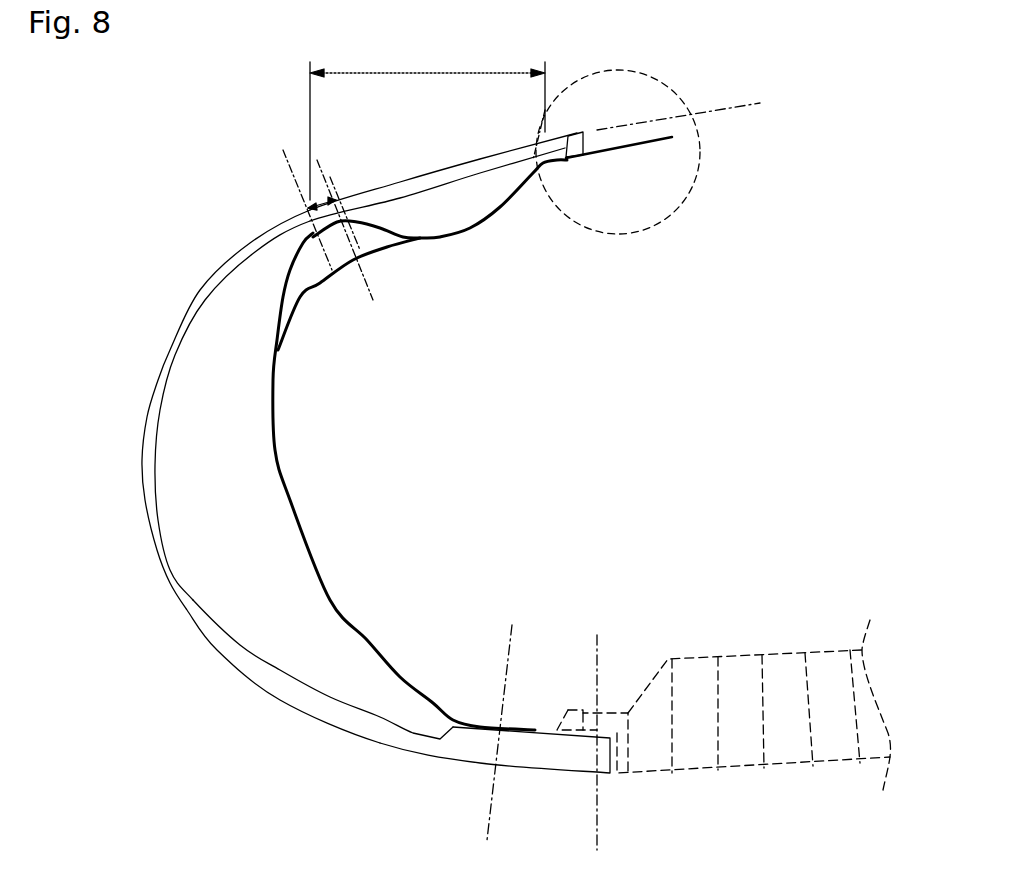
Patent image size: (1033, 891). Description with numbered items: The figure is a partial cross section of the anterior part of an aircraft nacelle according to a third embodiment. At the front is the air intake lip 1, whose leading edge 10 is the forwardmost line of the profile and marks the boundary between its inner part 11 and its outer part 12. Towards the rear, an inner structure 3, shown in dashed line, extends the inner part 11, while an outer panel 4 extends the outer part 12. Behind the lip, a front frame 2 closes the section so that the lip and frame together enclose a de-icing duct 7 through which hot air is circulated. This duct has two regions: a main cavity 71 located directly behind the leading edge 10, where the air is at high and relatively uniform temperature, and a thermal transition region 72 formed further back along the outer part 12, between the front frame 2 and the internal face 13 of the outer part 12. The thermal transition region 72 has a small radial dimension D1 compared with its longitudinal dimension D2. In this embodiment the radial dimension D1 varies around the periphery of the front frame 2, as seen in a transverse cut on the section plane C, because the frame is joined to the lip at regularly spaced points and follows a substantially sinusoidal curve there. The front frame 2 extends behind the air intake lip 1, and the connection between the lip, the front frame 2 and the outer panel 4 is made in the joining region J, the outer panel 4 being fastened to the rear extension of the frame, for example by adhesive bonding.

The air intake lip 1 is at (162, 367).
The leading edge 10 is at (142, 465).
The outer part 12 is at (437, 176).
The internal face 13 is at (474, 178).
The de-icing duct 7 is at (230, 572).
The main cavity 71 is at (305, 645).
The inner part 11 is at (440, 747).
The front frame 2 is at (283, 493).
The thermal transition region 72 is at (440, 213).
The outer panel 4 is at (722, 107).
The joining region J is at (693, 197).
The longitudinal dimension D2 is at (427, 123).
The section plane C is at (287, 162).
The radial dimension D1 is at (358, 230).
The inner structure 3 is at (745, 748).